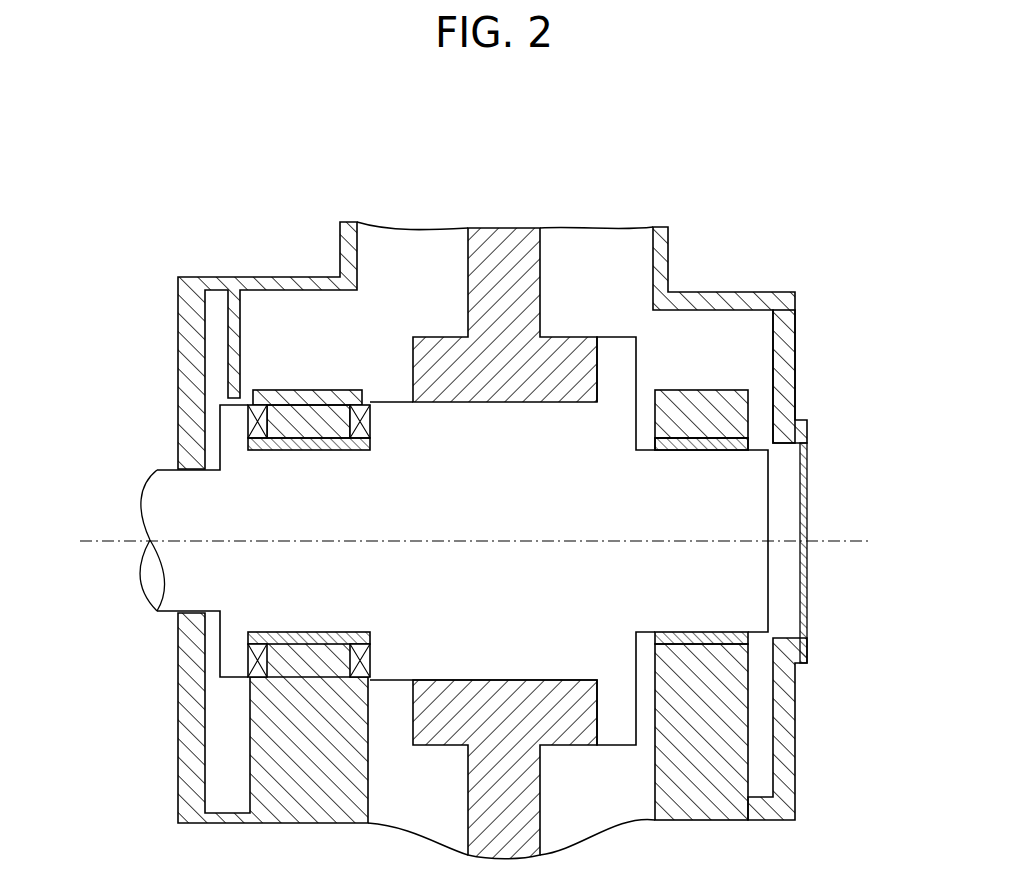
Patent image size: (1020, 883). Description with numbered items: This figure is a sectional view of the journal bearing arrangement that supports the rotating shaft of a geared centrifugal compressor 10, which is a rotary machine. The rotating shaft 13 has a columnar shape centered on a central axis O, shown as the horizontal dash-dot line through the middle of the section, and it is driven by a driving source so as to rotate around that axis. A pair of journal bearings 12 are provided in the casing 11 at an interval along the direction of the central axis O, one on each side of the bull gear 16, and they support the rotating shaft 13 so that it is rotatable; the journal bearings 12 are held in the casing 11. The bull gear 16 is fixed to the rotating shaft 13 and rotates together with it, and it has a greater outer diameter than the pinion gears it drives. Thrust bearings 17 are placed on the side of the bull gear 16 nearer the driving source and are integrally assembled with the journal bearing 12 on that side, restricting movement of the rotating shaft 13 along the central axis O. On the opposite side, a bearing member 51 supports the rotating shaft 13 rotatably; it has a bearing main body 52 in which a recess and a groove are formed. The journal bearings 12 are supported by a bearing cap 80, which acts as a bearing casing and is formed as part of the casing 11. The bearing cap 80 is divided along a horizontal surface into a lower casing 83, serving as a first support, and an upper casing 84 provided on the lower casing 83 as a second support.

The geared centrifugal compressor 10 is at (753, 220).
The casing 11 is at (322, 277).
The journal bearings 12 is at (552, 312).
The rotating shaft 13 is at (163, 469).
The bull gear 16 is at (541, 250).
The thrust bearings 17 is at (255, 655).
The bearing member 51 is at (718, 440).
The bearing main body 52 is at (701, 444).
The bearing cap 80 is at (750, 445).
The lower casing 83 is at (750, 712).
The upper casing 84 is at (737, 390).
The central axis O is at (102, 541).